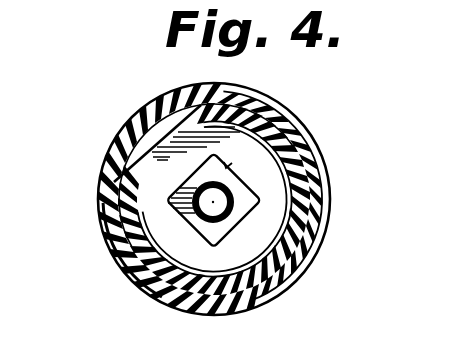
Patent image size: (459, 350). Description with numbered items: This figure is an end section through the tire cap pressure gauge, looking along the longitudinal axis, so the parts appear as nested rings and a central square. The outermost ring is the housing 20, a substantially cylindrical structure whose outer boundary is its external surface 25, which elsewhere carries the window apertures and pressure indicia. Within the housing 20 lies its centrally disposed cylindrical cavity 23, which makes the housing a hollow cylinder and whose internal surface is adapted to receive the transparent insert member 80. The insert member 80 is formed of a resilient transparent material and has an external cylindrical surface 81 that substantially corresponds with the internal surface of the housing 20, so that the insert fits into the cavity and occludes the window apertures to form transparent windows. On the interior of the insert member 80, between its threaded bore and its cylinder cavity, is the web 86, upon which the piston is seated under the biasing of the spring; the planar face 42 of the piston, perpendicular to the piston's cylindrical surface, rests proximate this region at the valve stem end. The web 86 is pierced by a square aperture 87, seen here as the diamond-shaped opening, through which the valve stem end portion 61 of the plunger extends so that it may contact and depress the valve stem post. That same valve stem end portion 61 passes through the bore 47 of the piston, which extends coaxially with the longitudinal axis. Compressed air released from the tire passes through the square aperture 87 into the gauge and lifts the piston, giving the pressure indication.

The housing 20 is at (160, 96).
The insert member 80 is at (150, 290).
The cylindrical cavity 23 is at (280, 295).
The external surface 25 is at (108, 146).
The external cylindrical surface 81 is at (290, 130).
The web 86 is at (270, 233).
The valve stem end portion 61 is at (197, 201).
The bore 47 is at (200, 230).
The planar face 42 is at (246, 197).
The square aperture 87 is at (232, 163).